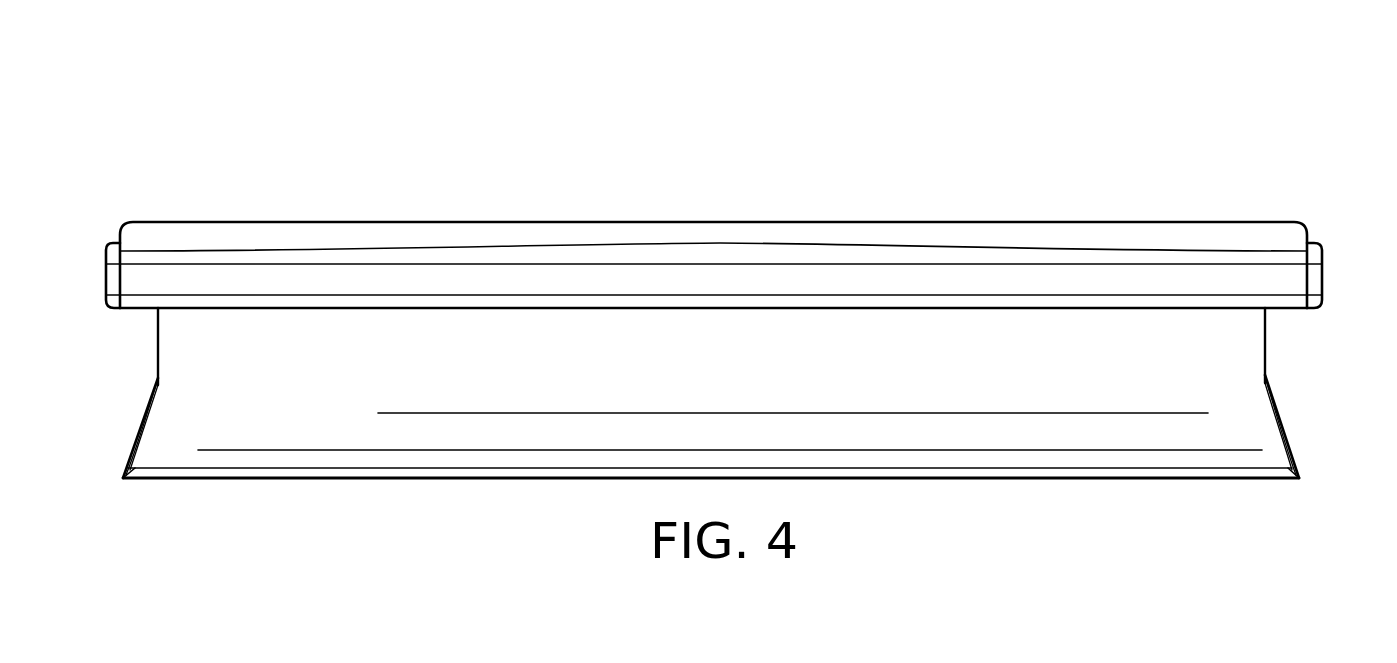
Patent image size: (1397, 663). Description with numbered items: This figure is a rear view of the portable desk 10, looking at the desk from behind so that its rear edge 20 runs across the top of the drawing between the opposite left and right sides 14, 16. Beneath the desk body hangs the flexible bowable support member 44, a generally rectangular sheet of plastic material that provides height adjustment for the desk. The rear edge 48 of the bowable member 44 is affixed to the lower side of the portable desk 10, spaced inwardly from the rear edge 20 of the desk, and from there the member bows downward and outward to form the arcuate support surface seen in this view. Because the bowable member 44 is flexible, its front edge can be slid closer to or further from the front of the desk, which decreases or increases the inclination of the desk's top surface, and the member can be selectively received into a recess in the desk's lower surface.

The portable desk 10 is at (352, 138).
The left side 14 is at (1320, 278).
The right side 16 is at (105, 278).
The rear edge 20 is at (308, 283).
The bowable support member 44 is at (1015, 372).
The rear edge of bowable member 48 is at (153, 311).